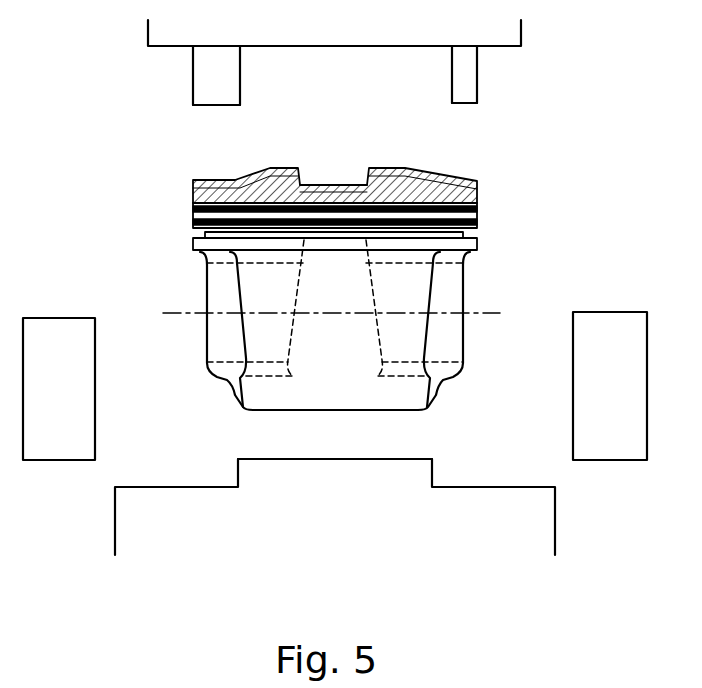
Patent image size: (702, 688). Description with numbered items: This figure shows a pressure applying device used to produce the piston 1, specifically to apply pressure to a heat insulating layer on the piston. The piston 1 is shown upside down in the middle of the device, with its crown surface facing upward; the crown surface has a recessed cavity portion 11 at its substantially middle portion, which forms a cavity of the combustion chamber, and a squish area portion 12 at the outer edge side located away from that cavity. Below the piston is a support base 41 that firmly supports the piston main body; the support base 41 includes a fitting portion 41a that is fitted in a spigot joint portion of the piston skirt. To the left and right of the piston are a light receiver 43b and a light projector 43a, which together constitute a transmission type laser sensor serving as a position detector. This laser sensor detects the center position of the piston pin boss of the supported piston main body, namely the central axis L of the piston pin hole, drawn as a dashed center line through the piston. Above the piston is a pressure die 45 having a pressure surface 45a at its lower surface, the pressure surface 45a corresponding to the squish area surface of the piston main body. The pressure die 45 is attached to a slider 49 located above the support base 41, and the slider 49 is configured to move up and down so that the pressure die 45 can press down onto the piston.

The piston 1 is at (379, 265).
The recessed cavity portion 11 is at (322, 184).
The squish area portion 12 is at (226, 180).
The support base 41 is at (540, 525).
The fitting portion 41a is at (433, 473).
The light projector 43a is at (608, 312).
The light receiver 43b is at (57, 318).
The pressure die 45 is at (463, 80).
The pressure surface 45a is at (210, 105).
The slider 49 is at (516, 33).
The central axis L is at (494, 310).